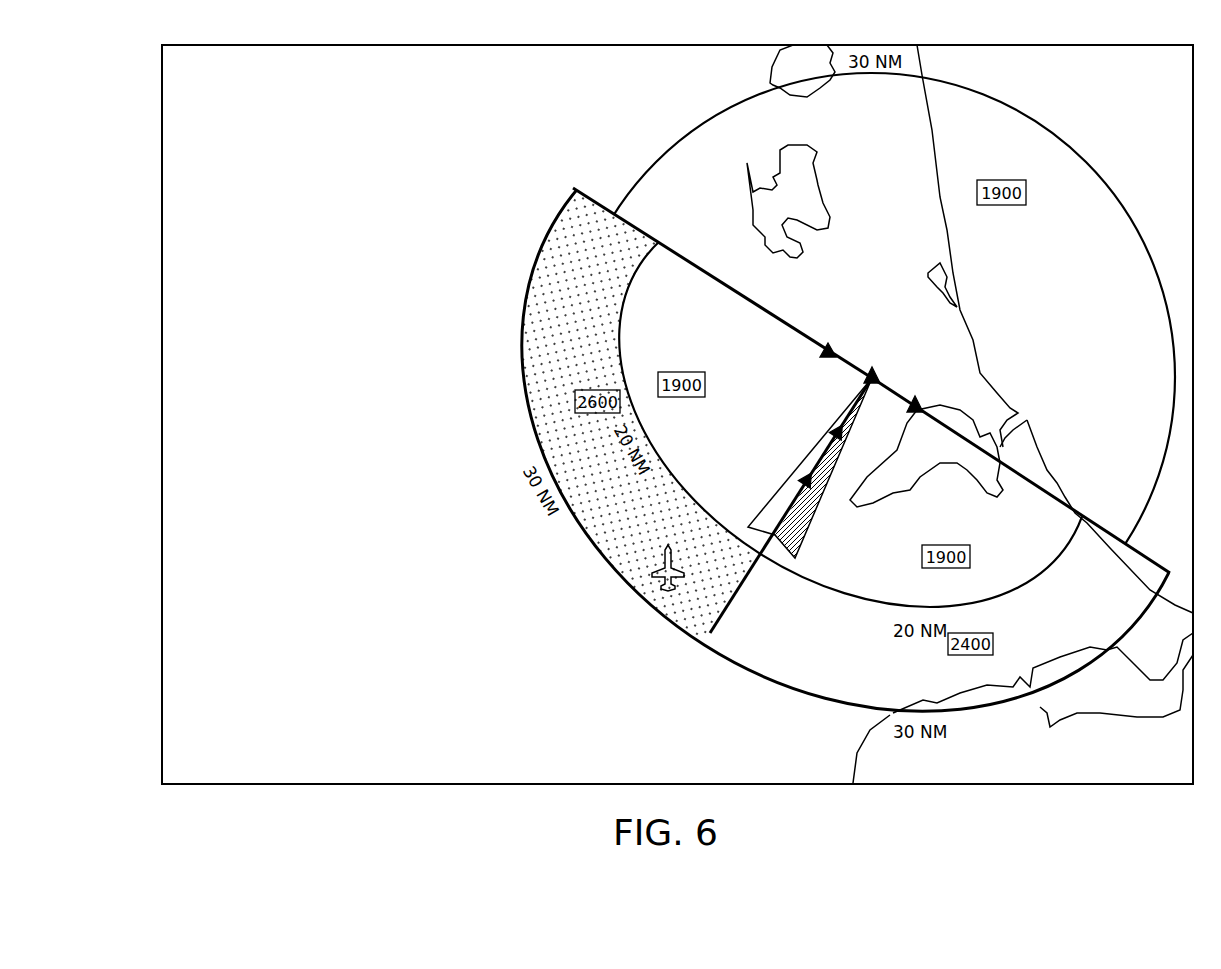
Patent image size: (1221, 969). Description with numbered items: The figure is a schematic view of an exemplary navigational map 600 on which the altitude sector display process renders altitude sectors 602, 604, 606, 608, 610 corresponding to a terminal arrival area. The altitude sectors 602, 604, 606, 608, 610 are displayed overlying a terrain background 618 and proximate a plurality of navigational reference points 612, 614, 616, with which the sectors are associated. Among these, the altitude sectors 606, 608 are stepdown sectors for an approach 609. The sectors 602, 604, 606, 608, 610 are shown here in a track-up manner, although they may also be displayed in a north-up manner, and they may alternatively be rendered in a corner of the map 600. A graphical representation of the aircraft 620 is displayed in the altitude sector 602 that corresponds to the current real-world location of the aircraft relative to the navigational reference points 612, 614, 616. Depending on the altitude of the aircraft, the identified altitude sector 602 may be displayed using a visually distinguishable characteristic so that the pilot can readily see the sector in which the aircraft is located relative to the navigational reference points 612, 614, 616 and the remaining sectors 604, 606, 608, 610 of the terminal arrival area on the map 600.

The navigational map 600 is at (607, 50).
The altitude sector 602 is at (540, 282).
The altitude sector 604 is at (812, 687).
The altitude sector 606 is at (707, 287).
The altitude sector 608 is at (1037, 500).
The approach 609 is at (836, 491).
The altitude sector 610 is at (1118, 214).
The navigational reference point 612 is at (878, 372).
The navigational reference point 614 is at (828, 345).
The navigational reference point 616 is at (920, 404).
The terrain background 618 is at (247, 290).
The graphical representation of the aircraft 620 is at (665, 585).